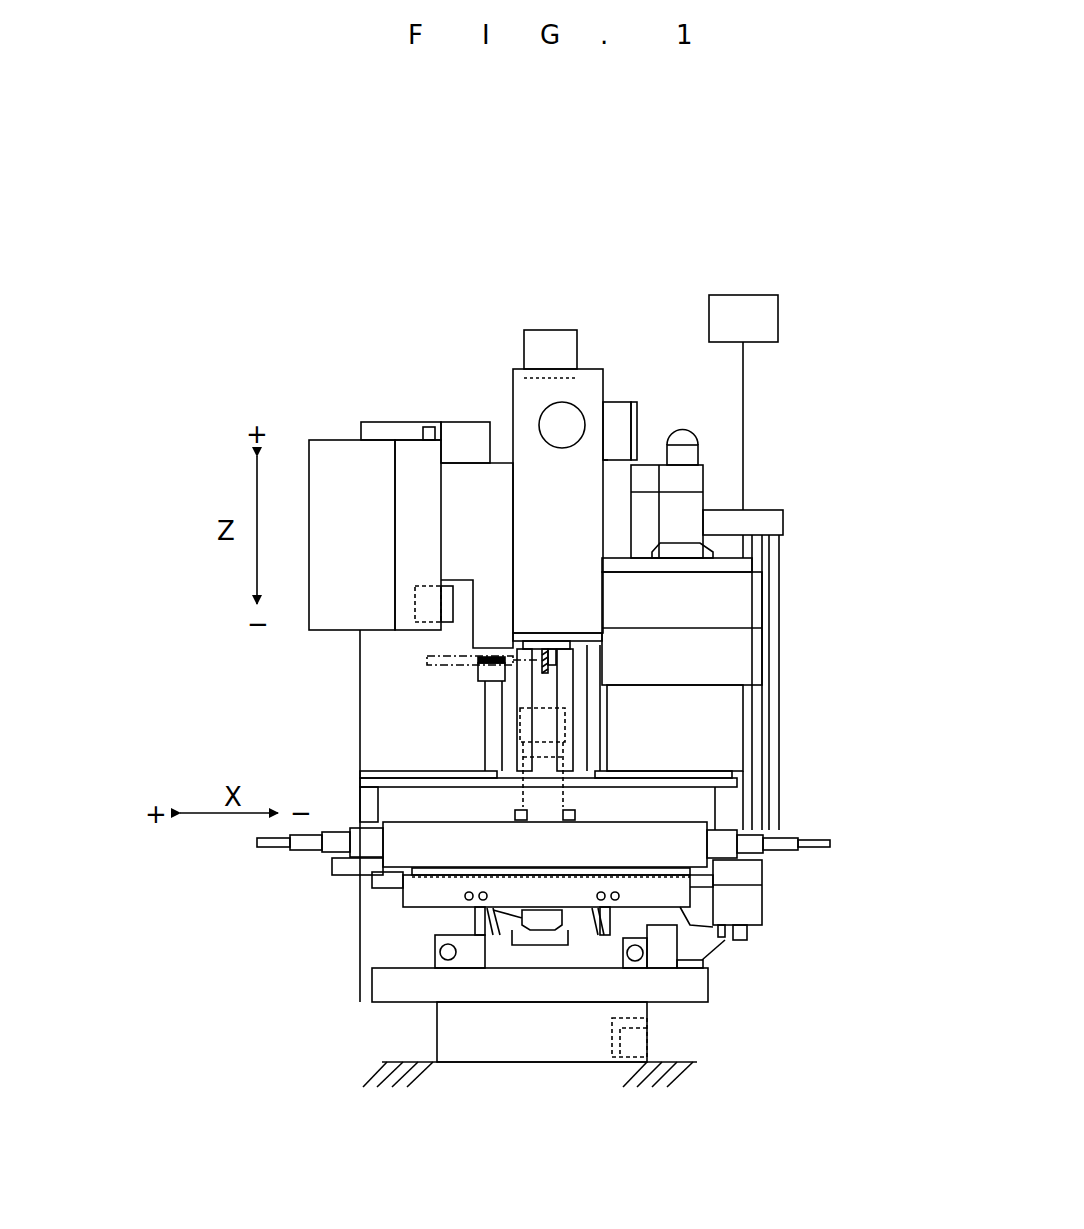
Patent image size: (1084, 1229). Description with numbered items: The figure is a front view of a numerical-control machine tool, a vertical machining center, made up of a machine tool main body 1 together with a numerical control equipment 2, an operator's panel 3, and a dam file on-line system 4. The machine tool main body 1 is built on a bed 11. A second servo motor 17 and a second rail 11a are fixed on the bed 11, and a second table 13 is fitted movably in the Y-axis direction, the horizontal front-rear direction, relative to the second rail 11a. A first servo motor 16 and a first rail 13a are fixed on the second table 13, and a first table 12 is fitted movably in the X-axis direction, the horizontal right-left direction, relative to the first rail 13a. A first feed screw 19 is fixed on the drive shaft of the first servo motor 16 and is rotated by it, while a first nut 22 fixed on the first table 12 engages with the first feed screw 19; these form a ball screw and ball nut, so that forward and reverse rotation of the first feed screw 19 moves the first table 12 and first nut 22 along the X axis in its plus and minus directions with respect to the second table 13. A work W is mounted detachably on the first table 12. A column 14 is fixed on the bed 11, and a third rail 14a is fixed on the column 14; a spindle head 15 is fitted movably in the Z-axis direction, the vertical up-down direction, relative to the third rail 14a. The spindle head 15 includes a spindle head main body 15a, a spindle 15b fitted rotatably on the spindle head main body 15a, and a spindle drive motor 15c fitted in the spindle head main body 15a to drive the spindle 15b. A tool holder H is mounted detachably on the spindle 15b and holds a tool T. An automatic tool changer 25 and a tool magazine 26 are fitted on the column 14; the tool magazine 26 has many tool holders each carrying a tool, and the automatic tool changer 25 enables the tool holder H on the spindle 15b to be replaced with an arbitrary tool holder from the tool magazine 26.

The machine tool main body 1 is at (350, 386).
The numerical control equipment 2 is at (713, 720).
The operator's panel 3 is at (705, 600).
The dam file on-line system 4 is at (745, 318).
The bed 11 is at (552, 1022).
The second rail 11a is at (427, 925).
The first table 12 is at (680, 827).
The second table 13 is at (418, 895).
The first rail 13a is at (373, 867).
The column 14 is at (547, 693).
The third rail 14a is at (513, 730).
The spindle head 15 is at (530, 450).
The spindle head main body 15a is at (588, 392).
The spindle 15b is at (540, 632).
The spindle drive motor 15c is at (550, 355).
The first servo motor 16 is at (750, 877).
The second servo motor 17 is at (527, 926).
The first feed screw 19 is at (667, 892).
The first nut 22 is at (545, 862).
The automatic tool changer 25 is at (480, 675).
The tool magazine 26 is at (350, 453).
The tool T is at (545, 675).
The tool holder H is at (558, 645).
The work W is at (540, 758).